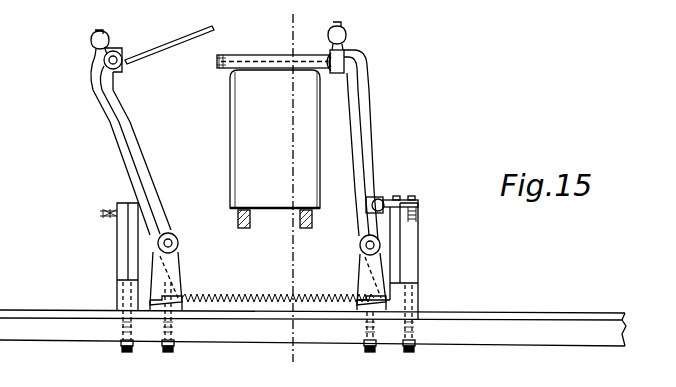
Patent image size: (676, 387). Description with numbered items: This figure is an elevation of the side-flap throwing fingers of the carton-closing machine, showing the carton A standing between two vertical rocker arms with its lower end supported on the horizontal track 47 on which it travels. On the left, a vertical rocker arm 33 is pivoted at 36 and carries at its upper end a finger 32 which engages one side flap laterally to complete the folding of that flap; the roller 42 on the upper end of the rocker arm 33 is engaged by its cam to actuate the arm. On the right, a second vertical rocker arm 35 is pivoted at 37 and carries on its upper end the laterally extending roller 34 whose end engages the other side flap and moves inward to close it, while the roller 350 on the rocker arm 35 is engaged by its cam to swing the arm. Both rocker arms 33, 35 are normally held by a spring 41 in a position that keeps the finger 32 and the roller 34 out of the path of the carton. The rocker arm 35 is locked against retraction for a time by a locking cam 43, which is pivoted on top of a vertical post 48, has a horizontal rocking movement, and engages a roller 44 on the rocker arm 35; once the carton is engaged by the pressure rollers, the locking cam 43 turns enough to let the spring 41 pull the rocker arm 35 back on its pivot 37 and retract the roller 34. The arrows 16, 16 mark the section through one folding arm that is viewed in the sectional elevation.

The section line 16 is at (299, 18).
The article / package A is at (232, 143).
The finger 32 is at (188, 36).
The vertical rocker arm 33 is at (140, 147).
The laterally extending roller 34 is at (252, 55).
The vertical rocker arm 35 is at (372, 128).
The pivot 36 is at (179, 243).
The pivot 37 is at (359, 245).
The spring 41 is at (241, 294).
The roller 42 is at (88, 42).
The locking cam 43 is at (404, 199).
The roller 44 is at (380, 199).
The horizontal track 47 is at (250, 229).
The vertical post 48 is at (416, 240).
The roller 350 is at (348, 36).